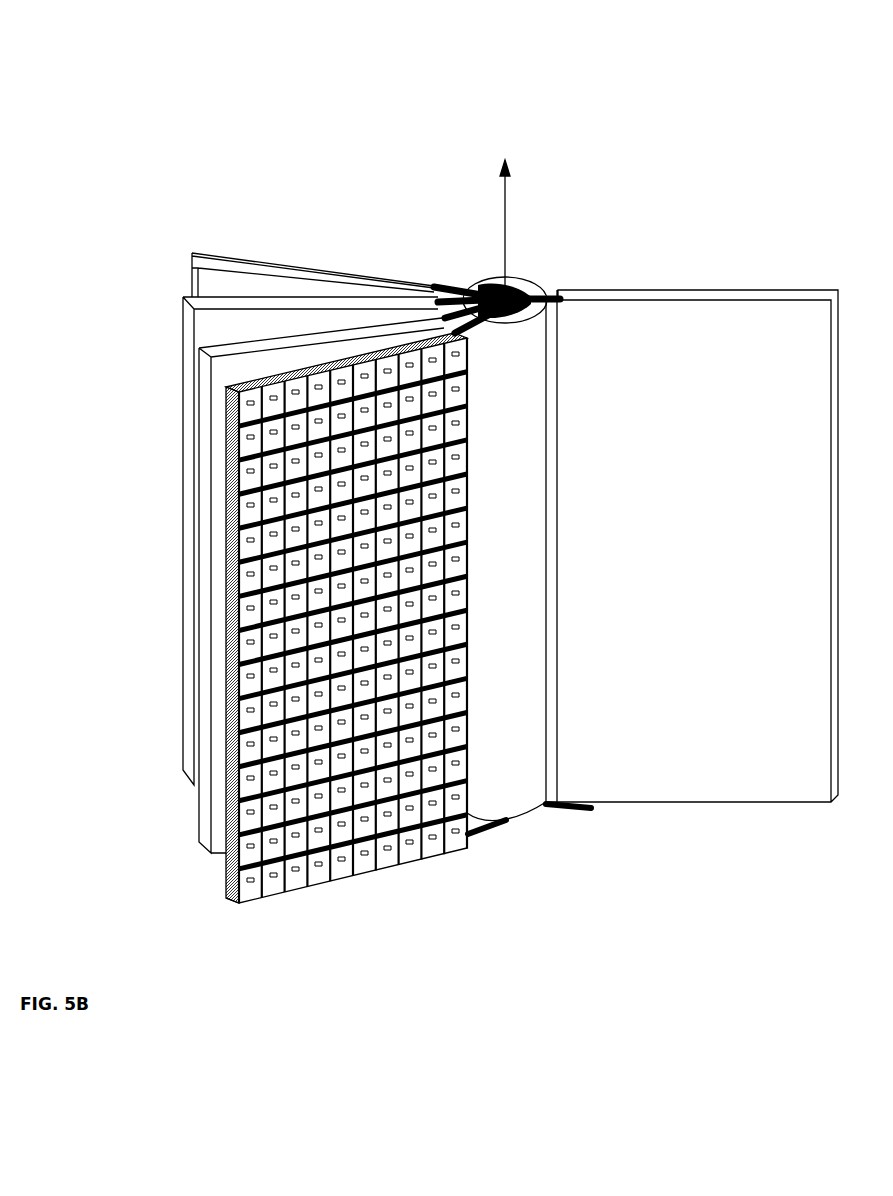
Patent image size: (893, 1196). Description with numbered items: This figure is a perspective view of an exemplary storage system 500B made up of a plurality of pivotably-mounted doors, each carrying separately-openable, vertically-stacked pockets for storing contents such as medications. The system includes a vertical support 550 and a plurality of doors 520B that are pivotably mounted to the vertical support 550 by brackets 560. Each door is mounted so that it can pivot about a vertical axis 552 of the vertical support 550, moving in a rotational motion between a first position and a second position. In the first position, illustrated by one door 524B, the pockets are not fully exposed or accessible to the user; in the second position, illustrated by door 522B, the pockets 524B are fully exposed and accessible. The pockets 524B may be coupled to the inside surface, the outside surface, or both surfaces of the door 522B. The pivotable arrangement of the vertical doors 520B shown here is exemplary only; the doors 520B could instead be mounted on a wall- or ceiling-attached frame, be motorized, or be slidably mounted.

The storage system 500B is at (218, 104).
The doors 520B is at (207, 448).
The pivotably-mounted door 522B is at (353, 348).
The pockets 524B is at (257, 292).
The vertical support 550 is at (515, 283).
The vertical axis 552 is at (502, 216).
The brackets 560 is at (452, 285).